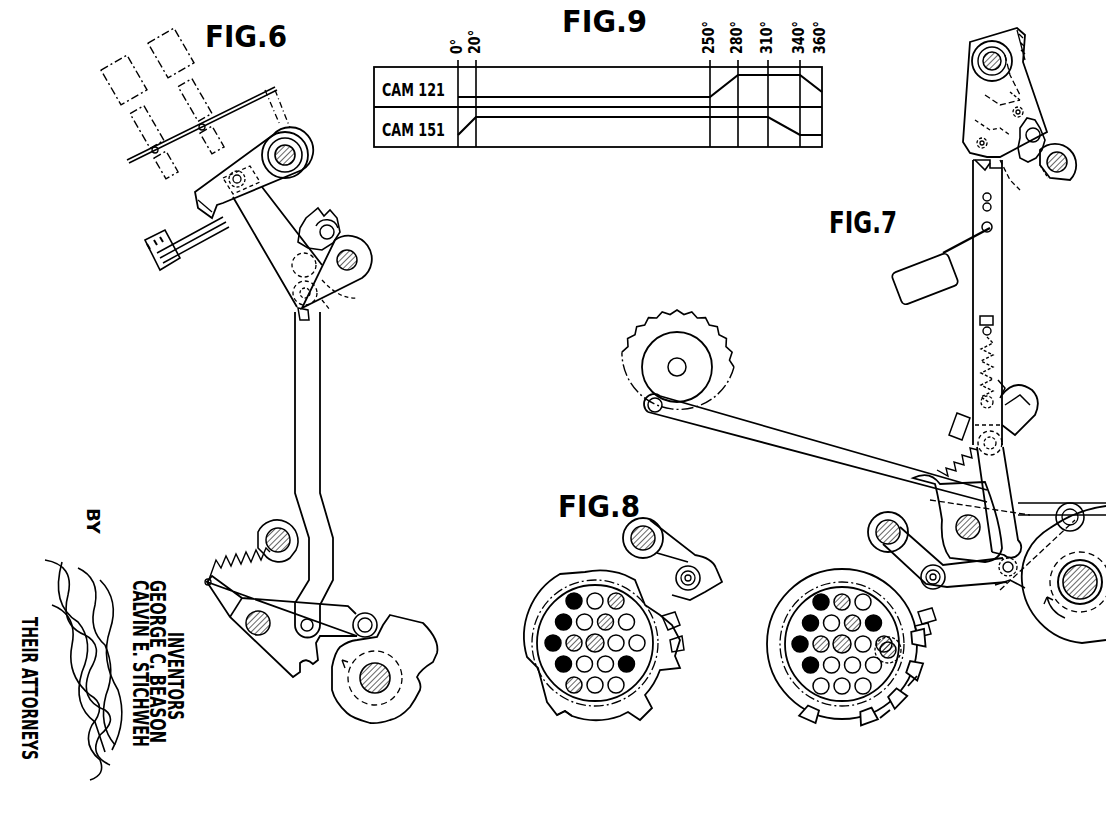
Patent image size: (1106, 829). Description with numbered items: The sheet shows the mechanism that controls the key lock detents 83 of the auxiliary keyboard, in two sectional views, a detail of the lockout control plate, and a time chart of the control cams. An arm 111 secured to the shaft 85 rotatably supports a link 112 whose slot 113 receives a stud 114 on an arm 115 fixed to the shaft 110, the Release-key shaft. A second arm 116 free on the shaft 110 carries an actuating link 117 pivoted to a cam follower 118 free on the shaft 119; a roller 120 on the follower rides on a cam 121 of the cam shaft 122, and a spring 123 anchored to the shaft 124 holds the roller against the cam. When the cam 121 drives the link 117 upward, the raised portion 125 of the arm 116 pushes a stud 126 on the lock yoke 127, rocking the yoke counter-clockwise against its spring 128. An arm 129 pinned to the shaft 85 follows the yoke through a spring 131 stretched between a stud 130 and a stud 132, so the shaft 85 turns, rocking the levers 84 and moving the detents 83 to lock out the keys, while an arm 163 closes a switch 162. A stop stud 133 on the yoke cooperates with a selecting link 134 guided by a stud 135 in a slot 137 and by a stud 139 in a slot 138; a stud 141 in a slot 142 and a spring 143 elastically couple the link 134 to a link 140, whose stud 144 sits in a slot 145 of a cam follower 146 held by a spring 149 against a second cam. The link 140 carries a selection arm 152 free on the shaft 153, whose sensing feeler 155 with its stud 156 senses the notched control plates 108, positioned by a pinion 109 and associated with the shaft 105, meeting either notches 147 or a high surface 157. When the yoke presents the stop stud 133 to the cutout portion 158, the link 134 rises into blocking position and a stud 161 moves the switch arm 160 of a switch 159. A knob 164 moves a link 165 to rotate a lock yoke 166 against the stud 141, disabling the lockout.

In FIG. 6, the key lock detent 83 is at (235, 105).
In FIG. 6, the lever 84 is at (282, 122).
In FIG. 6, the shaft 85 is at (295, 153).
In FIG. 7, the shaft 85 is at (979, 48).
In FIG. 8, the shaft 105 is at (592, 647).
In FIG. 7, the shaft 105 is at (838, 646).
In FIG. 8, the notched control plate 108 is at (555, 590).
In FIG. 7, the notched control plate 108 is at (812, 586).
In FIG. 7, the pinion 109 is at (898, 655).
In FIG. 6, the shaft 110 is at (357, 258).
In FIG. 7, the shaft 110 is at (1070, 160).
In FIG. 6, the arm 111 is at (255, 158).
In FIG. 7, the arm 111 is at (1058, 185).
In FIG. 6, the link 112 is at (277, 205).
In FIG. 6, the slot 113 is at (293, 300).
In FIG. 6, the stud 114 is at (323, 313).
In FIG. 6, the arm 115 is at (358, 280).
In FIG. 6, the arm 116 is at (350, 300).
In FIG. 6, the actuating link 117 is at (321, 428).
In FIG. 6, the cam follower 118 is at (268, 664).
In FIG. 7, the cam follower 118 is at (971, 518).
In FIG. 6, the shaft 119 is at (246, 630).
In FIG. 7, the shaft 119 is at (940, 515).
In FIG. 6, the roller 120 is at (374, 614).
In FIG. 6, the cam 121 is at (413, 633).
In FIG. 7, the cam 121 is at (1064, 574).
In FIG. 6, the cam shaft 122 is at (385, 686).
In FIG. 6, the spring 123 is at (233, 562).
In FIG. 6, the shaft 124 is at (282, 530).
In FIG. 7, the shaft 124 is at (1003, 445).
In FIG. 6, the raised portion 125 is at (334, 222).
In FIG. 6, the stud 126 is at (334, 233).
In FIG. 7, the stud 126 is at (1040, 136).
In FIG. 6, the lock yoke 127 is at (330, 210).
In FIG. 7, the lock yoke 127 is at (1032, 120).
In FIG. 7, the spring 128 is at (937, 148).
In FIG. 7, the arm 129 is at (965, 97).
In FIG. 7, the stud 130 is at (975, 110).
In FIG. 7, the spring 131 is at (1020, 97).
In FIG. 7, the stud 132 is at (1025, 110).
In FIG. 7, the stop stud 133 is at (1020, 177).
In FIG. 7, the selecting link 134 is at (1005, 283).
In FIG. 7, the stud 135 is at (982, 196).
In FIG. 7, the slot 137 is at (982, 207).
In FIG. 7, the slot 138 is at (994, 322).
In FIG. 7, the stud 139 is at (992, 331).
In FIG. 7, the link 140 is at (1006, 475).
In FIG. 7, the stud 141 is at (1005, 385).
In FIG. 7, the slot 142 is at (980, 402).
In FIG. 7, the spring 143 is at (980, 360).
In FIG. 7, the stud 144 is at (1013, 587).
In FIG. 7, the slot 145 is at (1002, 557).
In FIG. 7, the cam follower 146 is at (1084, 490).
In FIG. 8, the notched section 147 is at (608, 722).
In FIG. 7, the notched section 147 is at (890, 700).
In FIG. 7, the spring 149 is at (937, 463).
In FIG. 8, the selection arm 152 is at (664, 563).
In FIG. 7, the selection arm 152 is at (893, 560).
In FIG. 7, the shaft 153 is at (876, 530).
In FIG. 7, the sensing feeler portion 155 is at (936, 617).
In FIG. 8, the stud 156 is at (682, 625).
In FIG. 7, the stud 156 is at (932, 630).
In FIG. 8, the high surface 157 is at (685, 643).
In FIG. 7, the high surface 157 is at (915, 690).
In FIG. 7, the cutout portion 158 is at (978, 166).
In FIG. 7, the switch 159 is at (937, 292).
In FIG. 7, the switch arm 160 is at (1000, 250).
In FIG. 7, the stud 161 is at (993, 227).
In FIG. 6, the switch 162 is at (200, 240).
In FIG. 6, the arm 163 is at (197, 207).
In FIG. 7, the knob 164 is at (630, 388).
In FIG. 7, the link 165 is at (773, 438).
In FIG. 7, the lock yoke 166 is at (1037, 400).